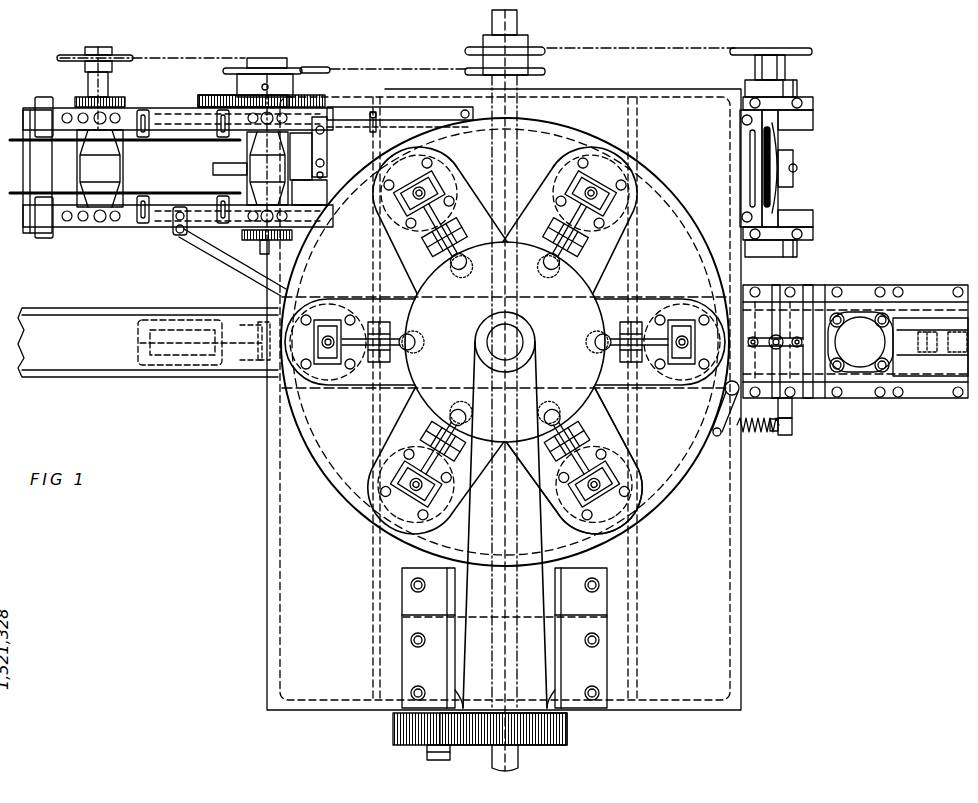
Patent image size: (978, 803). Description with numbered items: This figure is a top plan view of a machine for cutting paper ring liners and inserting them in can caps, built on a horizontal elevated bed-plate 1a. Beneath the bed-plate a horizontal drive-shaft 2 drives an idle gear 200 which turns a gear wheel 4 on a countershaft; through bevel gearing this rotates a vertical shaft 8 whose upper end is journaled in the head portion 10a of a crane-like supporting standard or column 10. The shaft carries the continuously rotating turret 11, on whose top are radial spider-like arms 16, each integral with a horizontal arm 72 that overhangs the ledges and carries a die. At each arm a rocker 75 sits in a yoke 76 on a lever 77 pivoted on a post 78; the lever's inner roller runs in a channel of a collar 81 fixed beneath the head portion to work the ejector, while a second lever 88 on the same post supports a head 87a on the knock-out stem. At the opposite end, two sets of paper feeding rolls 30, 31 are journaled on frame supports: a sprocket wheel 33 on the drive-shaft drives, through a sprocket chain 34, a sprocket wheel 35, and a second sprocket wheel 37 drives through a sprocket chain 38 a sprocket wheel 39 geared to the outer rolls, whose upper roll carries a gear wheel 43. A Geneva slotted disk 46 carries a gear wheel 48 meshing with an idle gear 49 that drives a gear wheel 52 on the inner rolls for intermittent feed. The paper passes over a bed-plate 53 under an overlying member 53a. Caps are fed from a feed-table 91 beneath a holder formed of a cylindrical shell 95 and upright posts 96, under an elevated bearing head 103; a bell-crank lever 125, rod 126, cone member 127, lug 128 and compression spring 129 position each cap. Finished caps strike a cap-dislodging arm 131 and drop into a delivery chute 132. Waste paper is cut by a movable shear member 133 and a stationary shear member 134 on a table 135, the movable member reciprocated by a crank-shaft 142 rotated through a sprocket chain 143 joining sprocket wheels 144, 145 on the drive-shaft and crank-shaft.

The bed-plate or platform 1a is at (727, 557).
The drive-shaft 2 is at (520, 758).
The gear wheel 4 is at (569, 733).
The vertical shaft 8 is at (516, 332).
The supporting standard or column 10 is at (478, 535).
The head portion 10a is at (528, 356).
The turret 11 is at (672, 462).
The spider-like arms 16 is at (458, 195).
The set of paper feeding rolls 30 is at (110, 168).
The set of paper feeding rolls 31 is at (250, 153).
The sprocket wheel 33 is at (546, 71).
The sprocket chain 34 is at (415, 68).
The sprocket wheel 35 is at (307, 67).
The sprocket wheel 37 is at (272, 67).
The sprocket chain 38 is at (198, 57).
The sprocket wheel 39 is at (126, 55).
The gear wheel 43 is at (125, 97).
The radially slotted wheel or disk 46 is at (213, 168).
The gear wheel 48 is at (320, 96).
The idle gear 49 is at (203, 95).
The gear wheel 52 is at (270, 118).
The bed-plate 53 is at (318, 206).
The overlying member 53a is at (328, 175).
The horizontal arm 72 is at (645, 185).
The rocker 75 is at (606, 530).
The yoke 76 is at (613, 470).
The lever 77 is at (615, 218).
The support or post 78 is at (592, 250).
The collar 81 is at (568, 328).
The head 87a is at (333, 362).
The lever 88 is at (378, 328).
The feed-table 91 is at (925, 393).
The hollow cylindrical shell 95 is at (862, 372).
The upright posts 96 is at (860, 342).
The bearing head 103 is at (783, 323).
The bell-crank lever 125 is at (717, 437).
The rod 126 is at (773, 432).
The cone member 127 is at (792, 431).
The arm or lug 128 is at (792, 416).
The compression spring 129 is at (760, 434).
The cap-dislodging arm 131 is at (233, 262).
The delivery chute 132 is at (88, 365).
The movable shear member 133 is at (776, 153).
The stationary shear member 134 is at (757, 150).
The table 135 is at (689, 115).
The crank-shaft 142 is at (780, 80).
The sprocket chain 143 is at (643, 47).
The sprocket wheel 144 is at (537, 48).
The sprocket wheel 145 is at (790, 48).
The idle gear 200 is at (394, 737).